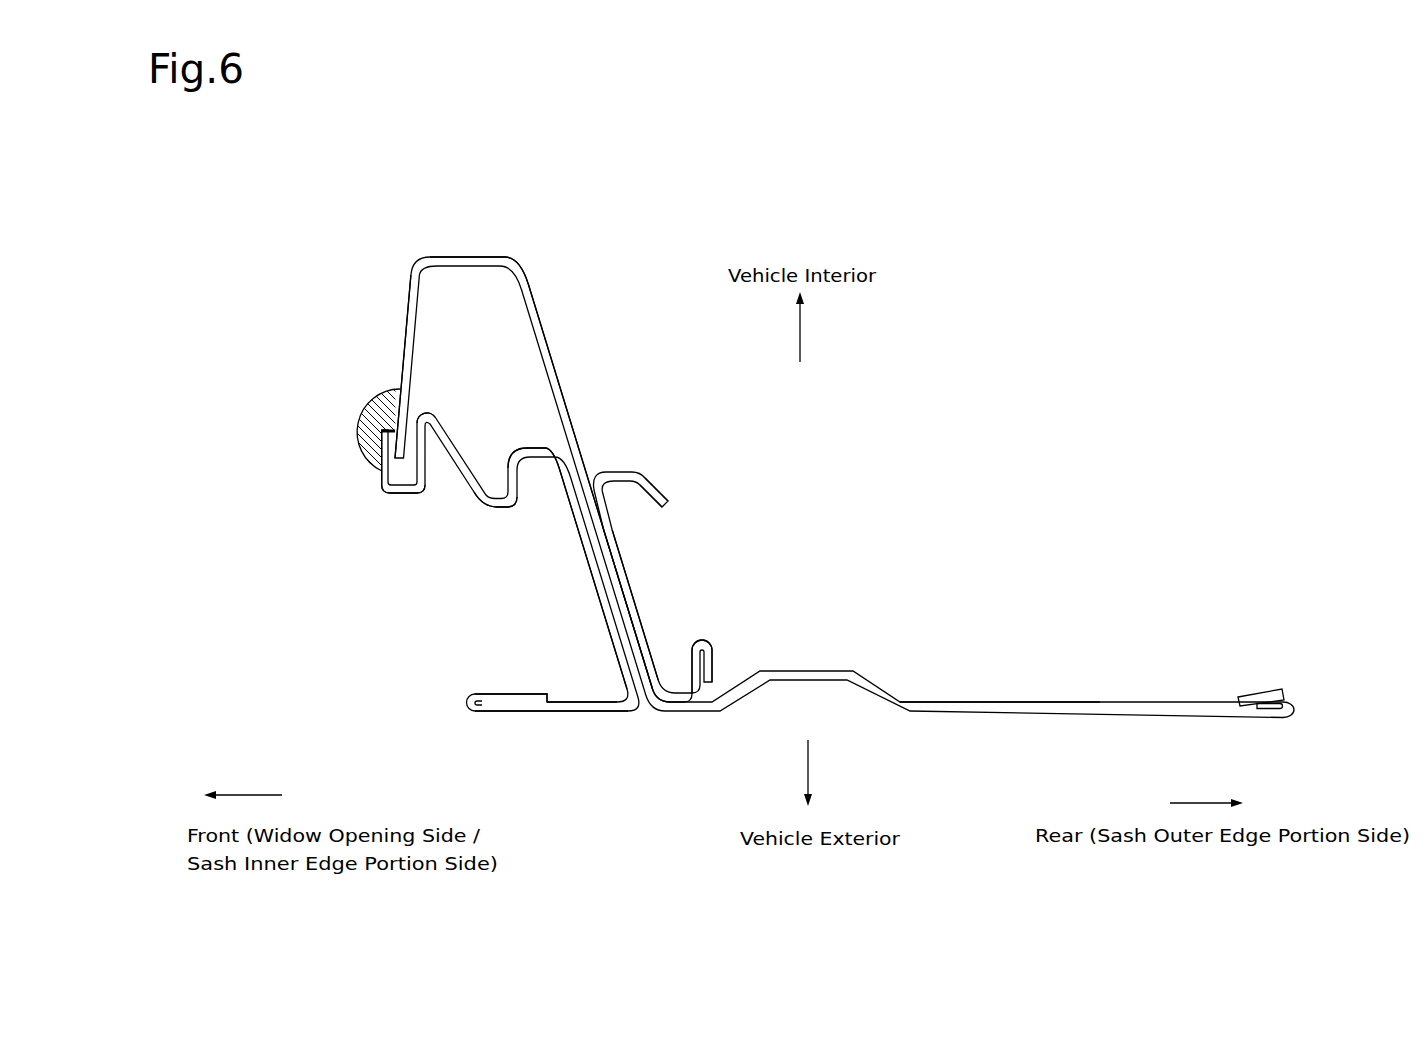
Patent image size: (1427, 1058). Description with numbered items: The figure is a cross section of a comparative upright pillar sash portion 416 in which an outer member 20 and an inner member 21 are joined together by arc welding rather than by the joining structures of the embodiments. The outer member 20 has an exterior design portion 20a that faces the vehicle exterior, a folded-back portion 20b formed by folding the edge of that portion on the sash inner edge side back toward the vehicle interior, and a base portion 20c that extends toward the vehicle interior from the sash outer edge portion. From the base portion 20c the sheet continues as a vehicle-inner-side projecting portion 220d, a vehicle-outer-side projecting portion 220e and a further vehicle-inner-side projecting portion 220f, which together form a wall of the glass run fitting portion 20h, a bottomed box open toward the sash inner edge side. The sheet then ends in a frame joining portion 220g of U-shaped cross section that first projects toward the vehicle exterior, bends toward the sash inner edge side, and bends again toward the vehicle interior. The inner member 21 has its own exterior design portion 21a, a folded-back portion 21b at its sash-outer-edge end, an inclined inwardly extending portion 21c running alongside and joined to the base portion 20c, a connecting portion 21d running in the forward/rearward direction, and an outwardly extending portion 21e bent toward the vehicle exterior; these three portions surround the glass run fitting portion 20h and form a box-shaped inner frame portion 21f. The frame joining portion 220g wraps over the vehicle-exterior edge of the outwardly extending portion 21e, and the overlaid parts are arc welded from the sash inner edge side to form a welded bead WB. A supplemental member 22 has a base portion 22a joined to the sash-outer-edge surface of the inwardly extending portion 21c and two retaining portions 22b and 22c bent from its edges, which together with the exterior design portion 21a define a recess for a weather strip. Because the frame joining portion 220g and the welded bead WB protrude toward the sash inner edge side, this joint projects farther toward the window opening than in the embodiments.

The upright pillar sash portion 416 is at (1170, 436).
The outer member 20 is at (595, 722).
The exterior design portion 20a is at (528, 712).
The folded-back portion 20b is at (503, 697).
The base portion 20c is at (598, 593).
The glass run fitting portion 20h is at (432, 583).
The vehicle-inner-side projecting portion 220d is at (530, 458).
The vehicle-outer-side projecting portion 220e is at (503, 503).
The vehicle-inner-side projecting portion 220f is at (432, 418).
The frame joining portion 220g is at (381, 478).
The inner member 21 is at (1038, 713).
The exterior design portion 21a is at (945, 713).
The folded-back portion 21b is at (1265, 690).
The inwardly extending portion 21c is at (558, 377).
The connecting portion 21d is at (467, 262).
The outwardly extending portion 21e is at (398, 368).
The inner frame portion 21f is at (548, 281).
The supplemental member 22 is at (678, 486).
The base portion 22a is at (620, 557).
The retaining portion 22b is at (713, 652).
The retaining portion 22c is at (670, 506).
The welded bead WB is at (366, 422).